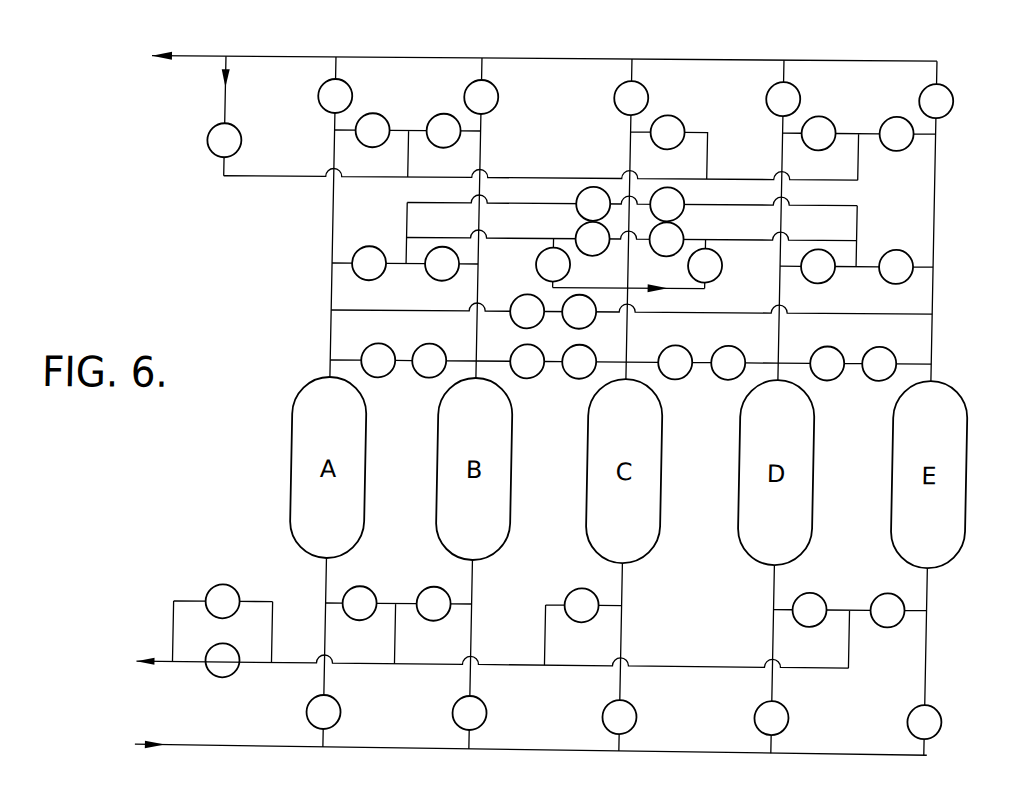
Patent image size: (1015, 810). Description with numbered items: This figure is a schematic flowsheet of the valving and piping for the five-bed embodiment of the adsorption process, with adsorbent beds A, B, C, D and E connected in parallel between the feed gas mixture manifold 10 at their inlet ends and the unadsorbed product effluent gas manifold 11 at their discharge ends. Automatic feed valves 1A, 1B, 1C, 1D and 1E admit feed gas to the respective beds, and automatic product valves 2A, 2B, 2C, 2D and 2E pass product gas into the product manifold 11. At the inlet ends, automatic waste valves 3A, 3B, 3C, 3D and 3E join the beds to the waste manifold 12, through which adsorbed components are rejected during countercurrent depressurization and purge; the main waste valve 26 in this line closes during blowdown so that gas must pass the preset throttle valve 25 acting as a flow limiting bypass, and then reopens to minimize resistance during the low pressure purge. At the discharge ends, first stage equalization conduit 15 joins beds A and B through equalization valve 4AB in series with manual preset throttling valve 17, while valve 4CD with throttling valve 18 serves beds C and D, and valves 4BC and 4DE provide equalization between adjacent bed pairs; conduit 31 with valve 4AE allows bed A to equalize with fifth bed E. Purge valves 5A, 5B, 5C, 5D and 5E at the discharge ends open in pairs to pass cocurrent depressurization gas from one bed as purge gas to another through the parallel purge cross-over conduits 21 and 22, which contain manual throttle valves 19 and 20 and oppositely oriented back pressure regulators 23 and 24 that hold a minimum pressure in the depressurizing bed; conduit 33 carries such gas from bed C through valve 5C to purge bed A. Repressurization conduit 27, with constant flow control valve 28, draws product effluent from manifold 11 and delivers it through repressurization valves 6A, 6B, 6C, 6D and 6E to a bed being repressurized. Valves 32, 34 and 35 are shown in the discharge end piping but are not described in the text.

The feed gas mixture manifold 10 is at (213, 748).
The unadsorbed product effluent gas manifold 11 is at (277, 57).
The waste manifold 12 is at (300, 666).
The first stage equalization conduit 15 is at (409, 366).
The manual preset throttling valve 17 is at (437, 343).
The manual preset throttling valve 18 is at (731, 343).
The manual valve 19 is at (687, 198).
The manual valve 20 is at (580, 230).
The purge cross-over conduit 21 is at (516, 202).
The purge cross-over conduit 22 is at (515, 237).
The back pressure regulator 23 is at (580, 197).
The back pressure regulator 24 is at (687, 231).
The preset throttle valve 25 is at (232, 584).
The main waste valve 26 is at (225, 676).
The repressurization conduit 27 is at (252, 178).
The constant flow control valve 28 is at (213, 152).
The conduit 31 is at (710, 310).
The valve 32 is at (597, 320).
The conduit 33 is at (607, 285).
The valve 34 is at (886, 343).
The valve 35 is at (580, 378).
The automatic feed valve 1A is at (318, 714).
The automatic feed valve 1B is at (464, 712).
The automatic feed valve 1C is at (614, 715).
The automatic feed valve 1D is at (766, 715).
The automatic feed valve 1E is at (919, 718).
The automatic product valve 2A is at (349, 86).
The automatic product valve 2B is at (495, 86).
The automatic product valve 2C is at (645, 87).
The automatic product valve 2D is at (797, 87).
The automatic product valve 2E is at (951, 90).
The automatic waste valve 3A is at (377, 586).
The automatic waste valve 3B is at (451, 586).
The automatic waste valve 3C is at (597, 586).
The automatic waste valve 3D is at (823, 589).
The automatic waste valve 3E is at (901, 589).
The equalization valve 4AB is at (384, 343).
The equalization valve 4AE is at (522, 325).
The equalization valve 4BC is at (546, 375).
The equalization valve 4CD is at (693, 376).
The equalization valve 4DE is at (848, 377).
The automatic purge valve 5A is at (382, 280).
The automatic purge valve 5B is at (455, 280).
The automatic purge valve 5C is at (540, 263).
The automatic purge valve 5D is at (830, 280).
The automatic purge valve 5E is at (911, 280).
The repressurization valve 6A is at (385, 147).
The repressurization valve 6B is at (456, 147).
The repressurization valve 6C is at (683, 147).
The repressurization valve 6D is at (831, 147).
The repressurization valve 6E is at (910, 147).